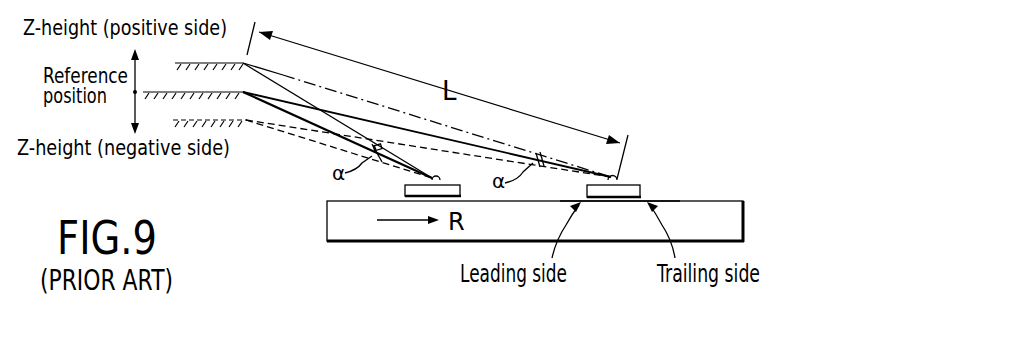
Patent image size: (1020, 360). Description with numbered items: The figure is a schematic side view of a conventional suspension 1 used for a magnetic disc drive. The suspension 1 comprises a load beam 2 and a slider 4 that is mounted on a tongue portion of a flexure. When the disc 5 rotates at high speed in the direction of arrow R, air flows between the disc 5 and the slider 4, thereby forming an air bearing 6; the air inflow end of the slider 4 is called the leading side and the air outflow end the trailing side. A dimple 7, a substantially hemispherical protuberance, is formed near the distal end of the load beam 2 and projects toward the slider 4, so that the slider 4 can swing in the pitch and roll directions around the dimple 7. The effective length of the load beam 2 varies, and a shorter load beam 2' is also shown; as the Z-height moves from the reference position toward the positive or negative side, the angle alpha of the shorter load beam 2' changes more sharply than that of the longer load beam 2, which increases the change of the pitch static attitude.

The suspension 1 is at (519, 76).
The load beam 2 is at (427, 120).
The shorter load beam 2' is at (352, 126).
The slider 4 is at (643, 192).
The disc 5 is at (720, 215).
The air bearing 6 is at (610, 201).
The dimple 7 is at (616, 181).